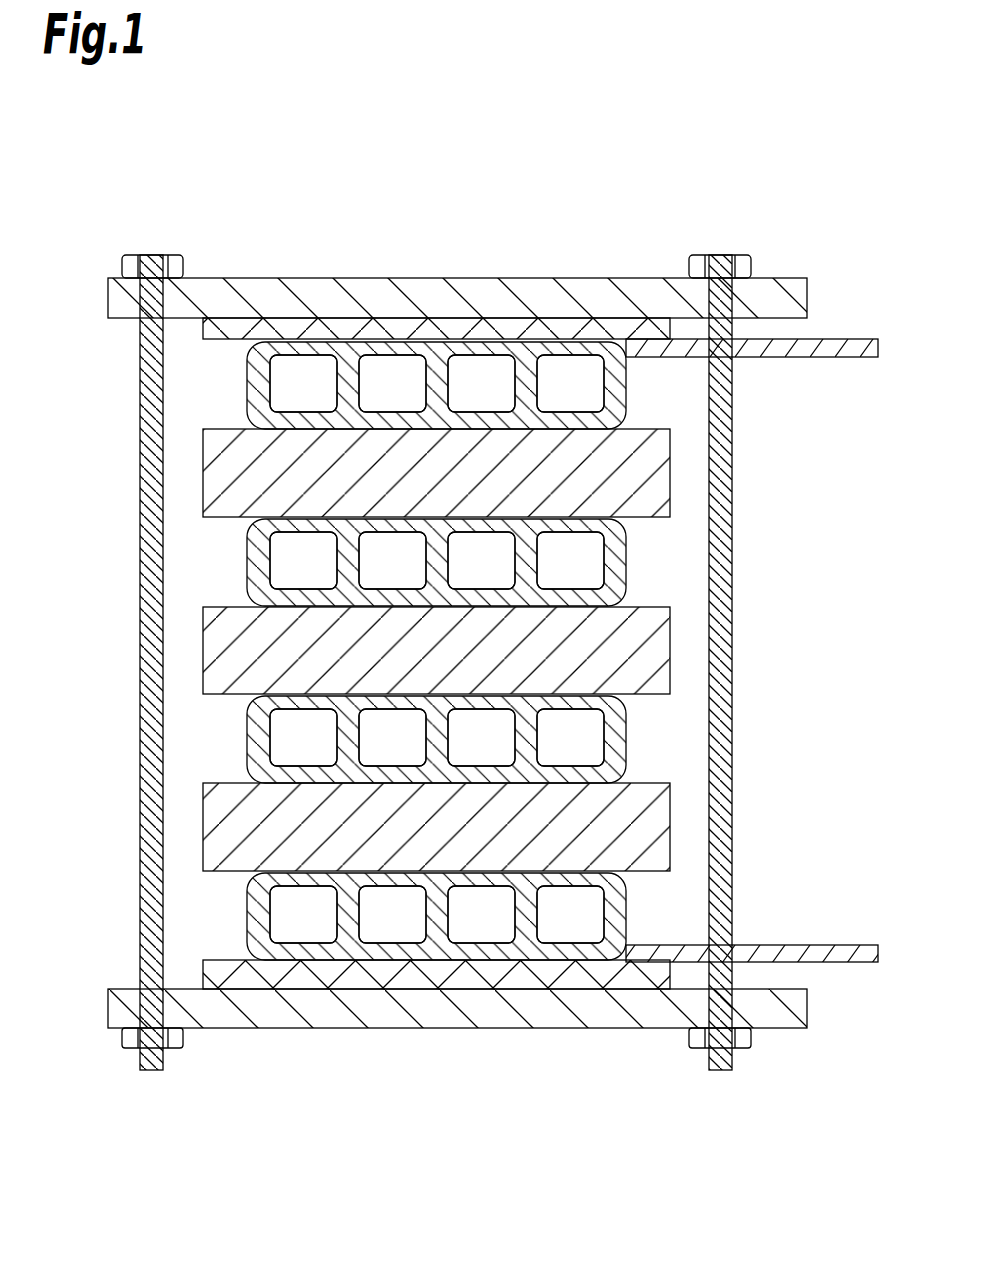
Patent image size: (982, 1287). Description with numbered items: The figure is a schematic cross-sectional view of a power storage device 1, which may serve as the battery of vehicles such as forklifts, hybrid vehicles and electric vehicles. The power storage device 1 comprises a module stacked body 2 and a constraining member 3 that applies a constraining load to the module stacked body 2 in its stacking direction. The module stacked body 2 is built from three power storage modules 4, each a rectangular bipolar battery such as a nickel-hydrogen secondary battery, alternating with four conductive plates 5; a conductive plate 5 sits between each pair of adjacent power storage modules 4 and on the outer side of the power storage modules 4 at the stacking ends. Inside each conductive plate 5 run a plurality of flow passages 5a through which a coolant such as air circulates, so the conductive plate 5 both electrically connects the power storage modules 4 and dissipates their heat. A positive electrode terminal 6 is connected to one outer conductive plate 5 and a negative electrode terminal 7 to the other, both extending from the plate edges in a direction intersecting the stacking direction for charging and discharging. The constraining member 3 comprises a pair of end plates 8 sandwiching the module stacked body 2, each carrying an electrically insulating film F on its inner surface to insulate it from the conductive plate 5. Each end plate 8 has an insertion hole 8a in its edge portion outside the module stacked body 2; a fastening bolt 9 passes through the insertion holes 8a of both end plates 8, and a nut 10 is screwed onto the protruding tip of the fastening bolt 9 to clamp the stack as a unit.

The power storage device 1 is at (134, 186).
The module stacked body 2 is at (185, 584).
The constraining member 3 is at (803, 264).
The power storage module 4 is at (670, 472).
The conductive plate 5 is at (635, 400).
The flow passage 5a is at (266, 383).
The positive electrode terminal 6 is at (855, 944).
The negative electrode terminal 7 is at (848, 358).
The end plate 8 is at (464, 279).
The insertion hole 8a is at (158, 292).
The fastening bolt 9 is at (732, 522).
The nut 10 is at (132, 1048).
The film F is at (210, 326).